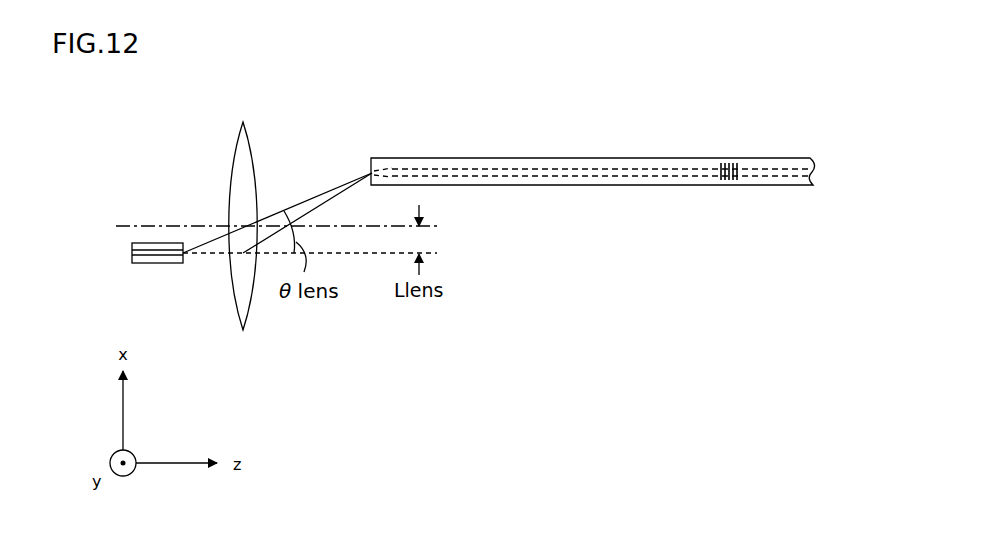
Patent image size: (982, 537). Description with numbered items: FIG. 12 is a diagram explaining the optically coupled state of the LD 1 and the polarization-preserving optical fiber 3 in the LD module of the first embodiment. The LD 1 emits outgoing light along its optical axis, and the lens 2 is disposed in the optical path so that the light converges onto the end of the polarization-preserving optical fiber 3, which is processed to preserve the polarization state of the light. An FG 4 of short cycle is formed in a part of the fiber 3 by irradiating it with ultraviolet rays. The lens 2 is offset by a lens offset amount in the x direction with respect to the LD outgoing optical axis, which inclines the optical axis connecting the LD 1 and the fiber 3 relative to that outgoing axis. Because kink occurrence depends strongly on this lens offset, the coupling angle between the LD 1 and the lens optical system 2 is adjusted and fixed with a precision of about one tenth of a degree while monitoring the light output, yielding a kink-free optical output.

The LD 1 is at (157, 263).
The lens 2 is at (242, 120).
The polarization-preserving optical fiber 3 is at (548, 168).
The FG 4 is at (729, 182).